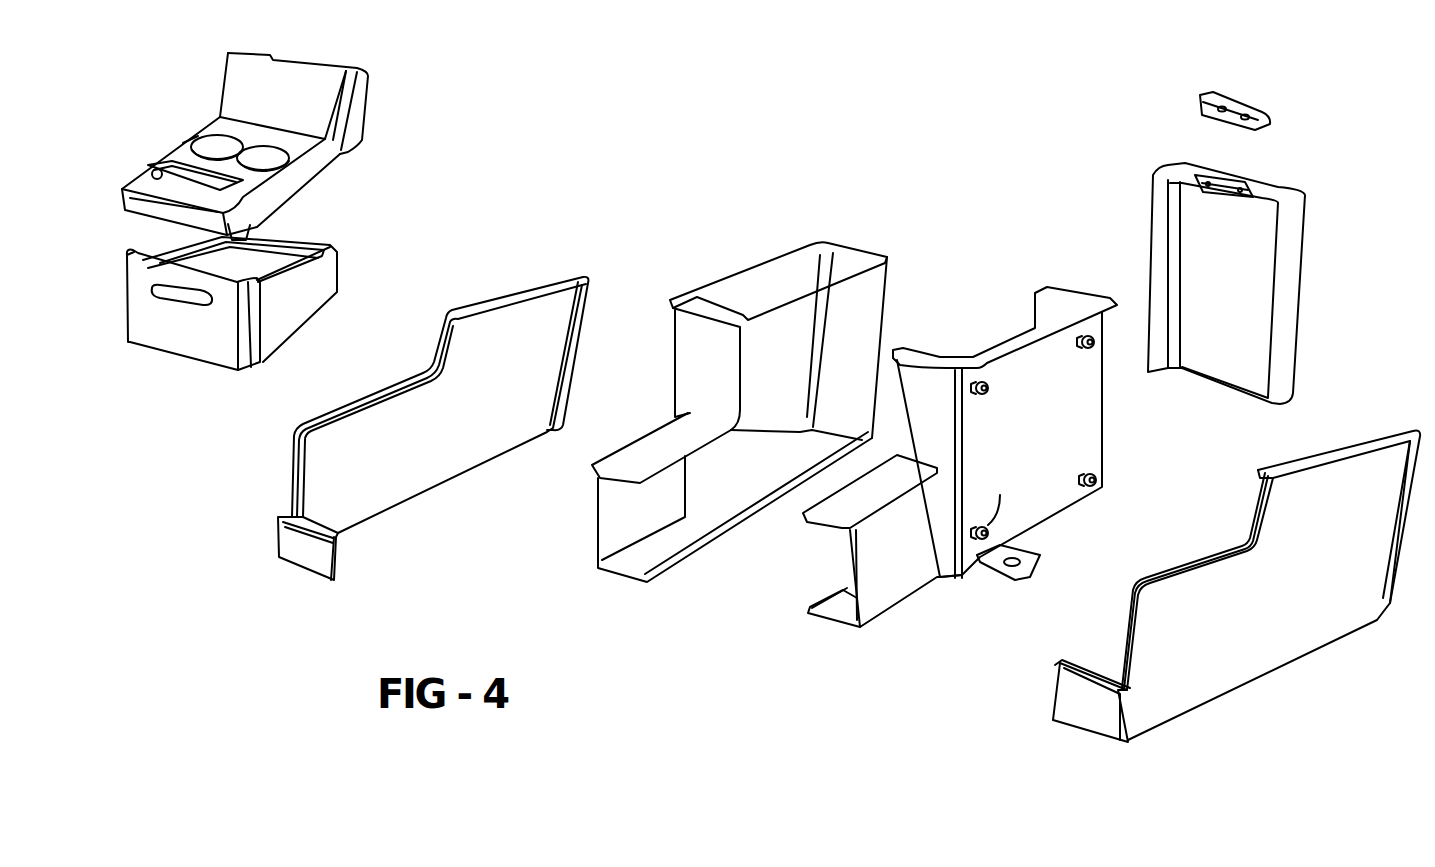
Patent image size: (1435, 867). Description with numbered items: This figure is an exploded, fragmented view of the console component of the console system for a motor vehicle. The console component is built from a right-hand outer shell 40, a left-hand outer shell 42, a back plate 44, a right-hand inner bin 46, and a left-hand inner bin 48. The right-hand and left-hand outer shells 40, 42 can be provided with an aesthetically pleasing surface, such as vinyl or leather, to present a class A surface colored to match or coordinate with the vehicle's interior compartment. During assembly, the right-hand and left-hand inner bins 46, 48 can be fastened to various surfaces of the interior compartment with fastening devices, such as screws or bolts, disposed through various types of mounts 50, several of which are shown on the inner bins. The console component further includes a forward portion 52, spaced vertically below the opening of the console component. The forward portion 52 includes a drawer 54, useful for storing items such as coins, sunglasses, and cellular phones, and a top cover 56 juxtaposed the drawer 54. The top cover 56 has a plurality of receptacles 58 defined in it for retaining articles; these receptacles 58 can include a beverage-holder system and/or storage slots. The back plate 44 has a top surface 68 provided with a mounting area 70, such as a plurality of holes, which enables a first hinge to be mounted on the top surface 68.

The right-hand outer shell 40 is at (512, 290).
The left-hand outer shell 42 is at (1343, 430).
The back plate 44 is at (1301, 275).
The right-hand inner bin 46 is at (753, 258).
The left-hand inner bin 48 is at (1103, 418).
The mounts 50 is at (990, 388).
The forward portion 52 is at (264, 147).
The drawer 54 is at (180, 338).
The top cover 56 is at (183, 143).
The receptacles 58 is at (224, 142).
The top surface 68 is at (1280, 190).
The mounting area 70 is at (1228, 183).